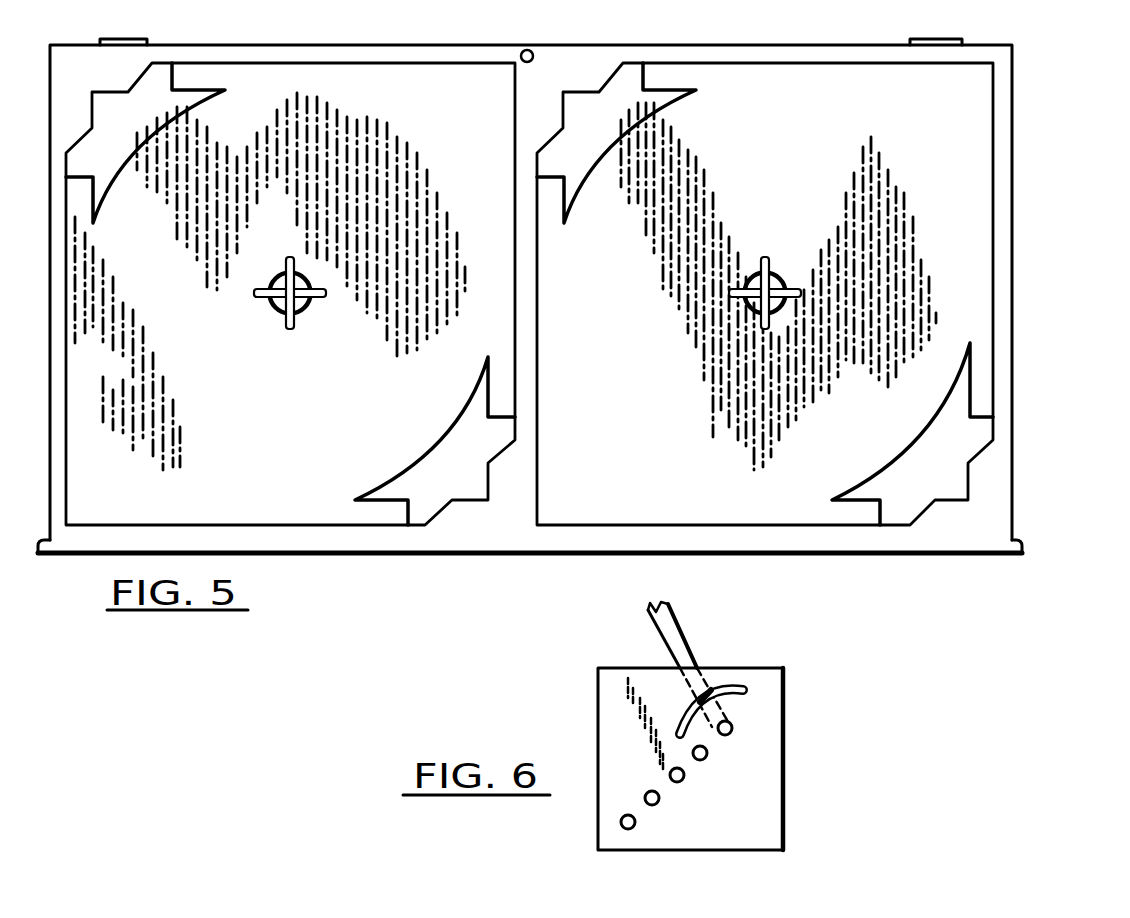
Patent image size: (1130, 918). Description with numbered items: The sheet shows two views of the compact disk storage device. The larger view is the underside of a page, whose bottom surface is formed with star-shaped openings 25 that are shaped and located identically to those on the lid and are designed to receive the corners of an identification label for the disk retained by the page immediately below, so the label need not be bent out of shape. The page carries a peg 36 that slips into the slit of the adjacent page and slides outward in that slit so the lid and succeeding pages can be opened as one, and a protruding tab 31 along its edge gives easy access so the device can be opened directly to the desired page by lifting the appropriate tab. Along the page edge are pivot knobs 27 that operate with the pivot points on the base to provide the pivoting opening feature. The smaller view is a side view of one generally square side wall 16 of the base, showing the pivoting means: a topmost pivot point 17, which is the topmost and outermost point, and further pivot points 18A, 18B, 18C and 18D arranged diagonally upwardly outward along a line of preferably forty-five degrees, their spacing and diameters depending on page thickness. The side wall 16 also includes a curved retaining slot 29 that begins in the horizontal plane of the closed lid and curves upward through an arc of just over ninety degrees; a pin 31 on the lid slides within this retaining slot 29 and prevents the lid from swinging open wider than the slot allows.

In FIG. 6, the side wall 16 is at (617, 694).
In FIG. 6, the topmost pivot point 17 is at (731, 724).
In FIG. 6, the pivot point 18A is at (708, 752).
In FIG. 6, the pivot point 18B is at (685, 775).
In FIG. 6, the pivot point 18C is at (660, 798).
In FIG. 6, the pivot point 18D is at (636, 822).
In FIG. 5, the star-shaped opening 25 is at (958, 450).
In FIG. 5, the pivot knob 27 is at (1025, 540).
In FIG. 6, the curved retaining slot 29 is at (737, 682).
In FIG. 5, the pin / protruding tab 31 is at (947, 38).
In FIG. 6, the pin / protruding tab 31 is at (707, 690).
In FIG. 5, the page peg 36 is at (532, 52).